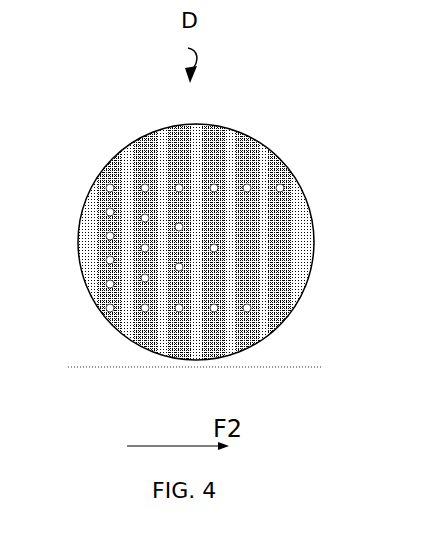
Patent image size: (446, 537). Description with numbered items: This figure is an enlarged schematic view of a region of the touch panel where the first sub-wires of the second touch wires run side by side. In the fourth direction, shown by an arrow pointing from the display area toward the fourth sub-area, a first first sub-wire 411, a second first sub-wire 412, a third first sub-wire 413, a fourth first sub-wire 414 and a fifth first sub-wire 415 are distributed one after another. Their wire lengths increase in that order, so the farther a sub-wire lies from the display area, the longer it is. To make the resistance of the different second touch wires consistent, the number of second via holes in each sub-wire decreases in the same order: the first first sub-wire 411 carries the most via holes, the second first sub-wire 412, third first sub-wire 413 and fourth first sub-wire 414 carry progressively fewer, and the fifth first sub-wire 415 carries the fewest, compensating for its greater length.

The first first sub-wire 411 is at (113, 318).
The second first sub-wire 412 is at (145, 330).
The third first sub-wire 413 is at (182, 345).
The fourth first sub-wire 414 is at (212, 340).
The fifth first sub-wire 415 is at (247, 330).